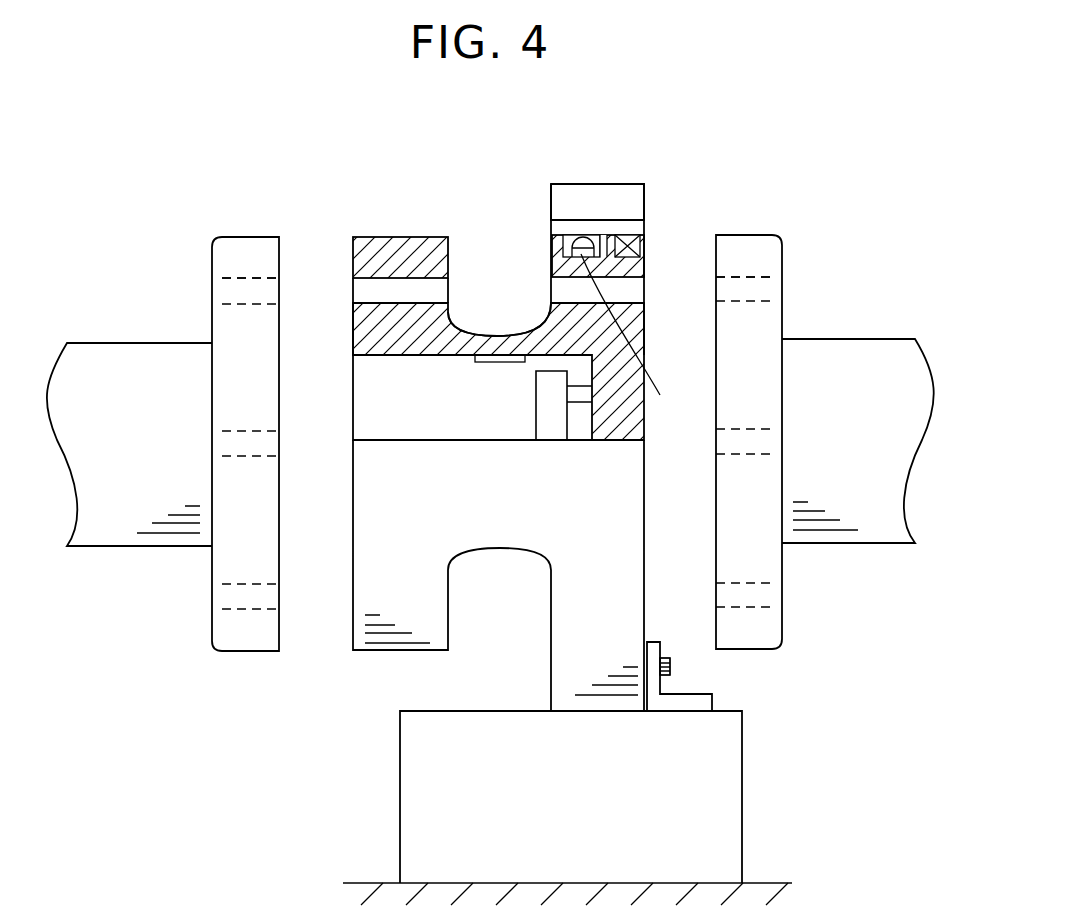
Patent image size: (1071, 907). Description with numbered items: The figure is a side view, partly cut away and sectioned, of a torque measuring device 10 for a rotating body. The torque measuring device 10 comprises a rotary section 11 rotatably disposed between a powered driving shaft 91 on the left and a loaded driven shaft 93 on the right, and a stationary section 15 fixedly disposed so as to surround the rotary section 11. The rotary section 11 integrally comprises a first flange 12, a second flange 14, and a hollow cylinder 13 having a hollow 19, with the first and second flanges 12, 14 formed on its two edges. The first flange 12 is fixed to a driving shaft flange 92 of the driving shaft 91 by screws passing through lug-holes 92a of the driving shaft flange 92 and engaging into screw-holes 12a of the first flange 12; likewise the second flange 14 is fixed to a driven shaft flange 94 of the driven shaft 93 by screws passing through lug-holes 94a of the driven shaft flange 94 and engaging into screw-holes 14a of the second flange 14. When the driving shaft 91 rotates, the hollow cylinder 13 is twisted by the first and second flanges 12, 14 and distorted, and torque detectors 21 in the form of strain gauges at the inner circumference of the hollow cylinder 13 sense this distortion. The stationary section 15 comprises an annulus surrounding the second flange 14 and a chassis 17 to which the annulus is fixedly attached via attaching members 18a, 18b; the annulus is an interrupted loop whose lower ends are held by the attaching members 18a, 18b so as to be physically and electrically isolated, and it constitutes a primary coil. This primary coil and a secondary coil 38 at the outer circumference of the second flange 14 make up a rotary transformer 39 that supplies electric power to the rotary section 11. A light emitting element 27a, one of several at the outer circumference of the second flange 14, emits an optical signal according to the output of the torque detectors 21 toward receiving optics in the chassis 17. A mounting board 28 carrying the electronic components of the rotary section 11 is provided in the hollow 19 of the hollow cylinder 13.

The torque measuring device 10 is at (336, 215).
The rotary section 11 is at (378, 164).
The first flange 12 is at (402, 237).
The screw-holes 12a is at (357, 317).
The hollow cylinder 13 is at (502, 336).
The second flange 14 is at (560, 330).
The screw-holes 14a is at (645, 318).
The stationary section 15 is at (825, 680).
The chassis 17 is at (730, 763).
The attaching member 18a is at (652, 660).
The attaching member 18b is at (665, 666).
The hollow 19 is at (425, 400).
The torque detectors 21 is at (475, 358).
The light emitting element 27a is at (642, 341).
The mounting board 28 is at (557, 432).
The secondary coil 38 is at (643, 242).
The rotary transformer 39 is at (727, 127).
The driving shaft 91 is at (118, 508).
The driving shaft flange 92 is at (252, 640).
The lug-holes 92a is at (240, 277).
The driven shaft 93 is at (882, 518).
The driven shaft flange 94 is at (770, 623).
The lug-holes 94a is at (752, 276).